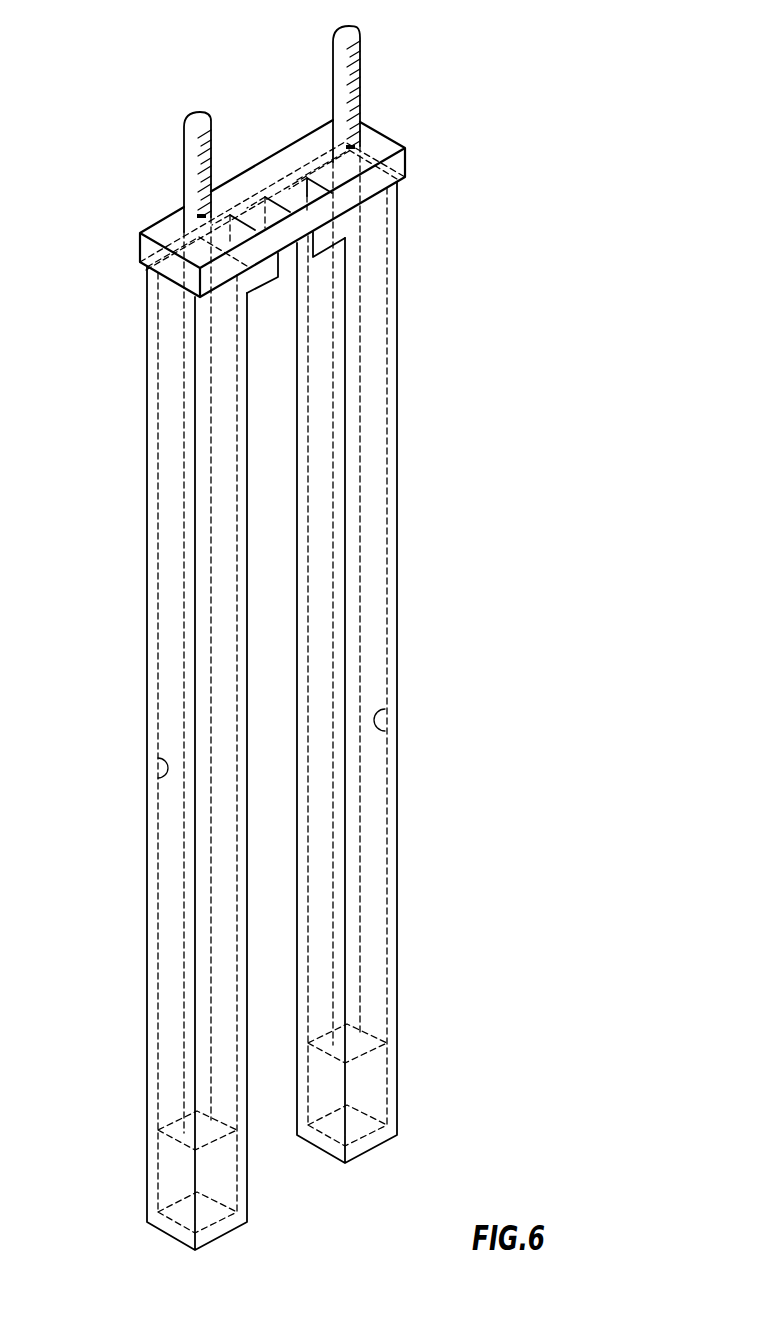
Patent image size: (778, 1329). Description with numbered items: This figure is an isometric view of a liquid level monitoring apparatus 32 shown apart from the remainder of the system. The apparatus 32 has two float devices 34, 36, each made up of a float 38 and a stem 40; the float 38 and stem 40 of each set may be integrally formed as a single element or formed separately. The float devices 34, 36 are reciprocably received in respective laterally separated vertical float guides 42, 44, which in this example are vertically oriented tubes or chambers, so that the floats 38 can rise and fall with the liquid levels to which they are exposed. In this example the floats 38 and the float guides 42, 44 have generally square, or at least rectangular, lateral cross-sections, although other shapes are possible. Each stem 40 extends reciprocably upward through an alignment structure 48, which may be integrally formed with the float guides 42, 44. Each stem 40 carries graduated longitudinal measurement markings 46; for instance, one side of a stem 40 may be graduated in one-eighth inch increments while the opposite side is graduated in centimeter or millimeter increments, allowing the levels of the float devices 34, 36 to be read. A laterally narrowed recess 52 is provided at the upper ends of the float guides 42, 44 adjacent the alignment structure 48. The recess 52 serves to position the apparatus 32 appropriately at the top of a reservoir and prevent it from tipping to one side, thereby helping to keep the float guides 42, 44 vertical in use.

The liquid level monitoring apparatus 32 is at (354, 631).
The float device 34 is at (146, 758).
The float device 36 is at (395, 672).
The float 38 is at (158, 1113).
The stem 40 is at (260, 579).
The float guide 42 is at (158, 778).
The float guide 44 is at (385, 731).
The graduated longitudinal measurement markings 46 is at (212, 152).
The alignment structure 48 is at (168, 222).
The laterally narrowed recess 52 is at (283, 268).